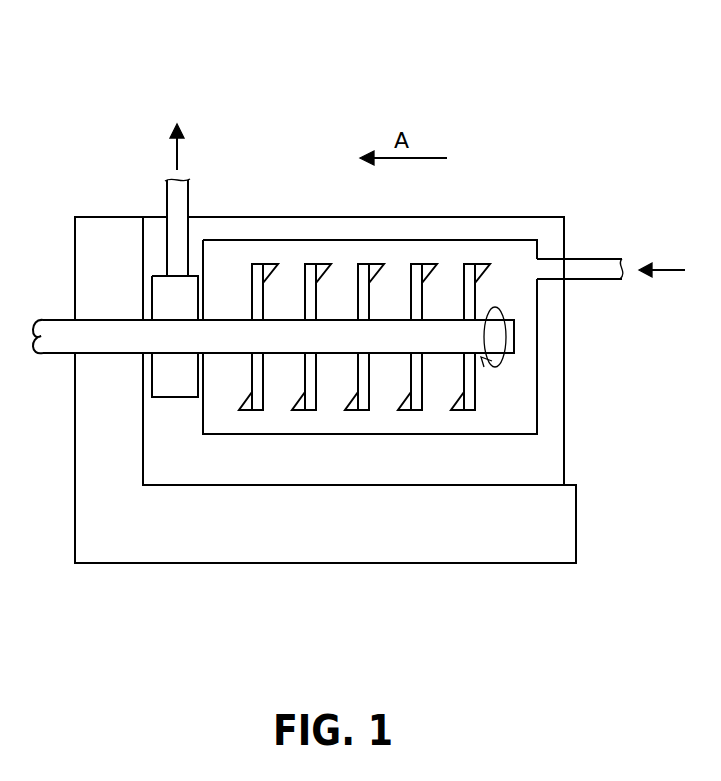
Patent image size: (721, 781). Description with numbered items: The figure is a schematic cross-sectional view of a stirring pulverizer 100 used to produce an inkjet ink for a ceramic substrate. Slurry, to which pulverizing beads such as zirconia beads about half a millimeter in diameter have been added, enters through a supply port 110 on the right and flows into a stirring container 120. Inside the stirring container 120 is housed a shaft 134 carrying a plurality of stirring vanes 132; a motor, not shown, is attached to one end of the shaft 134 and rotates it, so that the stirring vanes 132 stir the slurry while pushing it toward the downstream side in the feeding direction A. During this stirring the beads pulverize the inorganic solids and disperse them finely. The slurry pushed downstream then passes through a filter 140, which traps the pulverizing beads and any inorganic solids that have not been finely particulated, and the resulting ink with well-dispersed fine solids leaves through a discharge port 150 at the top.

The stirring pulverizer 100 is at (608, 92).
The supply port 110 is at (589, 262).
The stirring container 120 is at (478, 232).
The stirring vanes 132 is at (310, 262).
The shaft 134 is at (225, 327).
The filter 140 is at (198, 400).
The discharge port 150 is at (178, 207).